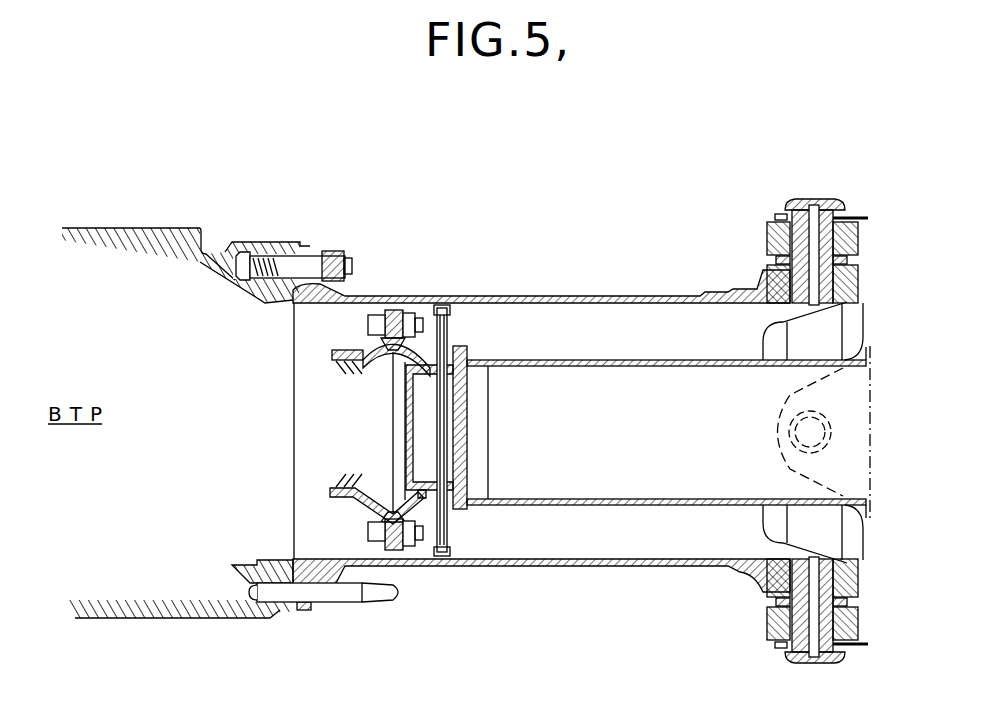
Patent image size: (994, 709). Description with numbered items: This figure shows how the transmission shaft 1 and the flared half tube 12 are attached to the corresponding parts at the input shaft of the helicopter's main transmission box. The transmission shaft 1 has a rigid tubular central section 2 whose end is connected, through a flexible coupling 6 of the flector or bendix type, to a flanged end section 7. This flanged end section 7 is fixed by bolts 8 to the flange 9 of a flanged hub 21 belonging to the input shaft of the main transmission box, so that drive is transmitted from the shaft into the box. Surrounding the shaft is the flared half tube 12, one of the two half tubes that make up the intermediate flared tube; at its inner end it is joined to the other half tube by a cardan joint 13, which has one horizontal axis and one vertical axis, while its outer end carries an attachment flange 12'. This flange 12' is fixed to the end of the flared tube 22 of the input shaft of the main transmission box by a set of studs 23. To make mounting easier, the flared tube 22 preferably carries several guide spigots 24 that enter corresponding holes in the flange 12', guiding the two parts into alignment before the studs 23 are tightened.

The transmission shaft 1 is at (618, 356).
The rigid tubular central section 2 is at (704, 505).
The flexible coupling 6 is at (449, 528).
The flanged end section 7 is at (425, 497).
The bolts 8 is at (418, 322).
The flange 9 is at (394, 312).
The flared half tube 12 is at (541, 418).
The attachment flange 12' is at (507, 238).
The cardan joint 13 is at (770, 190).
The flanged hub 21 is at (378, 356).
The flared tube 22 is at (252, 564).
The studs 23 is at (348, 262).
The guide spigots 24 is at (340, 597).